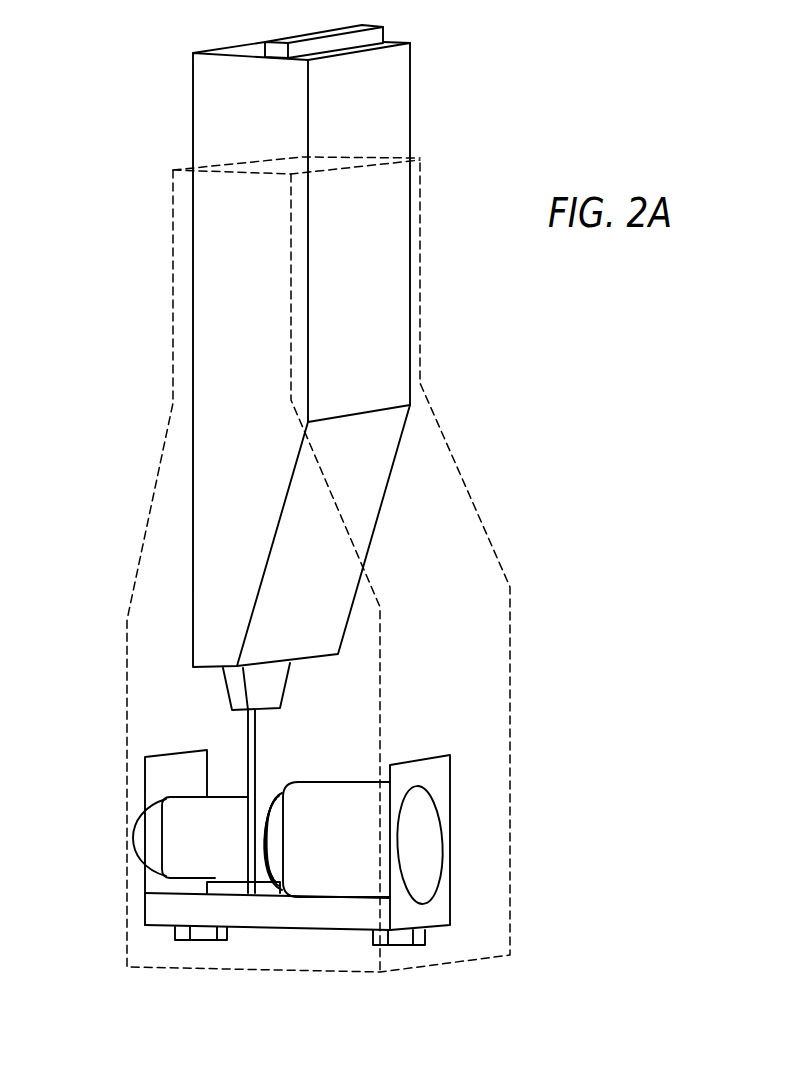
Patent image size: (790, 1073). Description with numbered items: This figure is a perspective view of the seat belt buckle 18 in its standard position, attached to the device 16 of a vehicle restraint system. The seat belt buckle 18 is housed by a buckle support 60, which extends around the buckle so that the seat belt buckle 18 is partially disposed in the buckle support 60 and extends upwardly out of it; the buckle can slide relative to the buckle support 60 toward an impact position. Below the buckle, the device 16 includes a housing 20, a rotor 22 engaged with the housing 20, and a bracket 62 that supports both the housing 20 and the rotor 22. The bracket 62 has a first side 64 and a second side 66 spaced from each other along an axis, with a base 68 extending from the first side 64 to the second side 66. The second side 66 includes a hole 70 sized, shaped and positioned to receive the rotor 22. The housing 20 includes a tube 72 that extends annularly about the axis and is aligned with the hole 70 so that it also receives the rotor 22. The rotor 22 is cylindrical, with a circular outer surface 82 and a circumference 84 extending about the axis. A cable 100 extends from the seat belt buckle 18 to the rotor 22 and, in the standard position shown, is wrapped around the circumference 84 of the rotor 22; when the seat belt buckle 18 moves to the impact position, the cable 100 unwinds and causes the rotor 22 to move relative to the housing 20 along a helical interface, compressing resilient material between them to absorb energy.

The device 16 is at (482, 833).
The seat belt buckle 18 is at (412, 92).
The housing 20 is at (337, 778).
The rotor 22 is at (230, 796).
The buckle support 60 is at (513, 660).
The bracket 62 is at (423, 756).
The first side 64 is at (452, 790).
The second side 66 is at (155, 755).
The base 68 is at (254, 931).
The hole 70 is at (167, 795).
The tube 72 is at (297, 780).
The outer surface 82 is at (135, 823).
The circumference 84 is at (212, 878).
The cable 100 is at (245, 723).